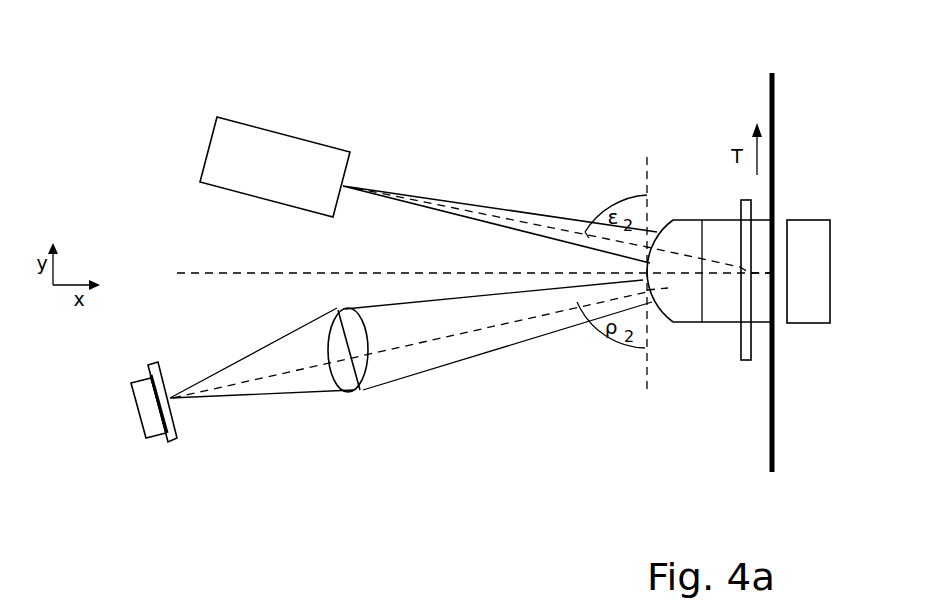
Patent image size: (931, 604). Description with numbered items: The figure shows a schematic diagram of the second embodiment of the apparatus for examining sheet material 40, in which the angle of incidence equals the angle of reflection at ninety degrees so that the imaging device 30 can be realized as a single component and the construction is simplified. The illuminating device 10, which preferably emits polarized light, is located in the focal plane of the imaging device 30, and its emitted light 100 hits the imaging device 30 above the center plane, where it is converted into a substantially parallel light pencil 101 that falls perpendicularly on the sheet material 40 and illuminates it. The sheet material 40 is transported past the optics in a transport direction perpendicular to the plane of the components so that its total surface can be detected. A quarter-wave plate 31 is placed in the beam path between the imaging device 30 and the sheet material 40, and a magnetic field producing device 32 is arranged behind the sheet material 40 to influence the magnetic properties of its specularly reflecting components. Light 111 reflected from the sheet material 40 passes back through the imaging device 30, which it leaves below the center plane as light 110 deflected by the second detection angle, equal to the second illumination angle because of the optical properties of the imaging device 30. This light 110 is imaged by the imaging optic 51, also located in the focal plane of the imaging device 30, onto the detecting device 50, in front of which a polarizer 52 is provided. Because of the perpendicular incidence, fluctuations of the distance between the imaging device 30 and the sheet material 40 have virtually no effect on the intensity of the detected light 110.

The illuminating device 10 is at (245, 145).
The emitted light 100 is at (437, 195).
The imaging device 30 is at (682, 238).
The light pencil 101 is at (728, 263).
The reflected light 111 is at (685, 287).
The sheet material 40 is at (774, 128).
The magnetic field producing device 32 is at (810, 290).
The quarter-wave plate 31 is at (745, 360).
The deflected light 110 is at (503, 350).
The imaging optic 51 is at (352, 393).
The detecting device 50 is at (150, 420).
The polarizer 52 is at (167, 443).